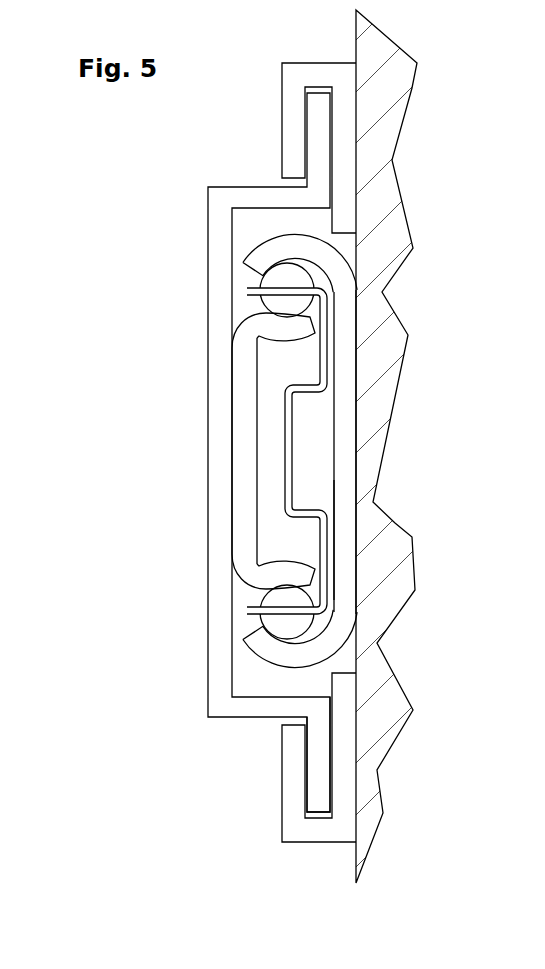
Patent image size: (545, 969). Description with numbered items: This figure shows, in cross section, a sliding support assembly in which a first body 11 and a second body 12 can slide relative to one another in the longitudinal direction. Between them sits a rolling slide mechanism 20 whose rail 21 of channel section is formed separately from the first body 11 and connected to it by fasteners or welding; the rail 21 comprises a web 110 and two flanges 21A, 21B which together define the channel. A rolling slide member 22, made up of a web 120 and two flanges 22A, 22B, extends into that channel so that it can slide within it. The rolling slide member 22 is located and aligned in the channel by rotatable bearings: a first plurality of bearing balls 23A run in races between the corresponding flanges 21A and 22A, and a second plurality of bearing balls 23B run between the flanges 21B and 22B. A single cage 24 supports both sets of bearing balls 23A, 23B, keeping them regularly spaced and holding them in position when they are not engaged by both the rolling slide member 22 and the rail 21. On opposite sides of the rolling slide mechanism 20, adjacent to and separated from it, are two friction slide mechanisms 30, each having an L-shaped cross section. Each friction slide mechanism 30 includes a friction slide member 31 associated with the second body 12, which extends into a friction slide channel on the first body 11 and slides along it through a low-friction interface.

The first body 11 is at (385, 240).
The second body 12 is at (207, 543).
The rolling slide mechanism 20 is at (377, 438).
The rail 21 is at (343, 462).
The first flange 21A is at (307, 663).
The second flange 21B is at (301, 236).
The rolling slide member 22 is at (195, 440).
The flange 22A is at (253, 577).
The flange 22B is at (262, 323).
The bearing balls 23A is at (256, 620).
The bearing balls 23B is at (262, 276).
The cage 24 is at (281, 483).
The friction slide mechanism 30 is at (262, 73).
The friction slide member 31 is at (312, 708).
The web 110 is at (343, 530).
The web 120 is at (243, 430).